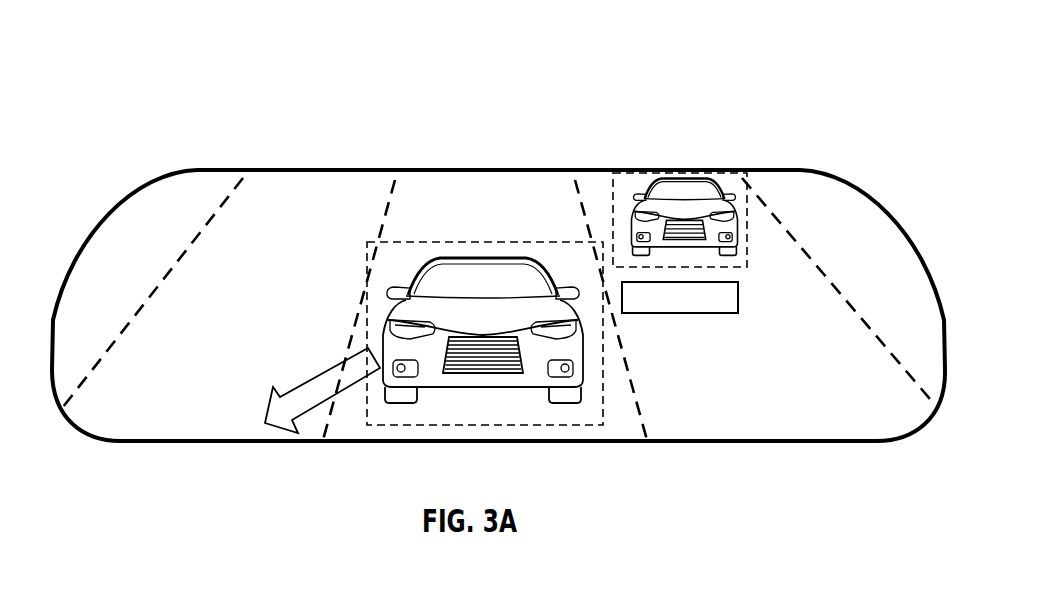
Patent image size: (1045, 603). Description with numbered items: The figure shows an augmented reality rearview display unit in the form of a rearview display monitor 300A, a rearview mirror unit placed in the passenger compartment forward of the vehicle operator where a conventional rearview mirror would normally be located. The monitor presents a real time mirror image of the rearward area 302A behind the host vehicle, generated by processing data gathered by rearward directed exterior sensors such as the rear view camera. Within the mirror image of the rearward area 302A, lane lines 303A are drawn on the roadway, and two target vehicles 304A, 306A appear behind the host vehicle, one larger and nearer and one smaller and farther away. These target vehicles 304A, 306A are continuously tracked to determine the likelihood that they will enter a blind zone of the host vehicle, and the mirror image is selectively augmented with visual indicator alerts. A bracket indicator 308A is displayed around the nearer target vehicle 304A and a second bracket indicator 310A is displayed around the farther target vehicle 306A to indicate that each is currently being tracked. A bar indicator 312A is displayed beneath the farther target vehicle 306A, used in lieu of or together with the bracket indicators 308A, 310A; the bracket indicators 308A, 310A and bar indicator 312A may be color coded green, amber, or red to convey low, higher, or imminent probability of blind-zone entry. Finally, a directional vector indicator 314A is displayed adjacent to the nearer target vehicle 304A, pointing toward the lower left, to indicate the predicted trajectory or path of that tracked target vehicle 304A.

The rearview display monitor 300A is at (794, 38).
The mirror image of the rearward area 302A is at (157, 158).
The lane lines 303A is at (203, 294).
The target vehicle 304A is at (508, 248).
The target vehicle 306A is at (683, 168).
The bracket indicator 308A is at (365, 250).
The bracket indicator 310A is at (607, 193).
The bar indicator 312A is at (704, 318).
The directional vector indicator 314A is at (283, 412).